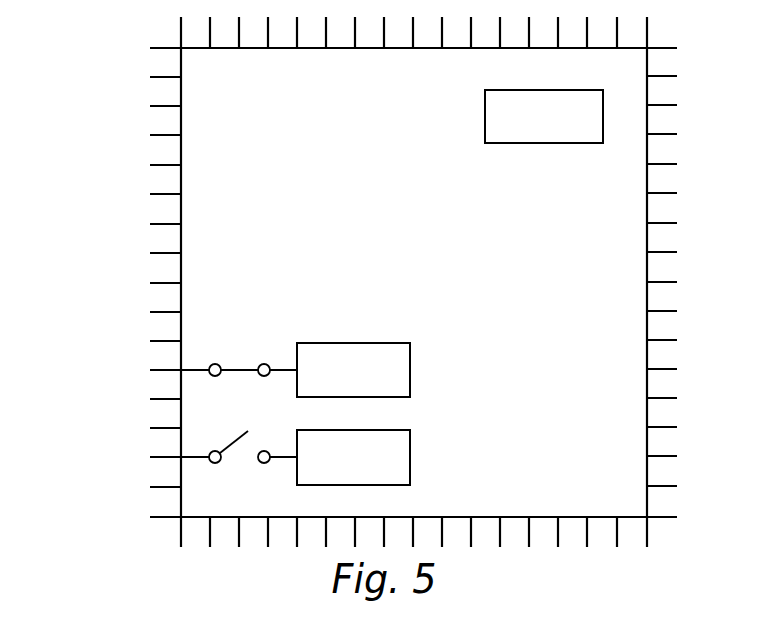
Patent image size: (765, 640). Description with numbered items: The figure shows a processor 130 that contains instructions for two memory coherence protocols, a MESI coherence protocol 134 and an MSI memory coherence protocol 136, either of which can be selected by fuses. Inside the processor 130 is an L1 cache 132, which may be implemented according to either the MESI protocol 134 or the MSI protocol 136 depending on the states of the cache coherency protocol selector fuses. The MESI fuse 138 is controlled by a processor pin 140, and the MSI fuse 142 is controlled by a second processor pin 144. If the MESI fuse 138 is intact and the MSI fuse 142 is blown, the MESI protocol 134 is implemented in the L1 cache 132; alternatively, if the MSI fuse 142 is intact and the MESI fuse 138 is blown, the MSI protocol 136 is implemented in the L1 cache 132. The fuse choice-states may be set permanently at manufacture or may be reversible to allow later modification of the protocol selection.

The processor 130 is at (108, 197).
The L1 cache 132 is at (547, 143).
The MESI coherence protocol 134 is at (410, 370).
The MSI memory coherence protocol 136 is at (410, 457).
The MESI fuse 138 is at (242, 369).
The processor pin 140 is at (165, 366).
The MSI fuse 142 is at (233, 438).
The second processor pin 144 is at (162, 457).